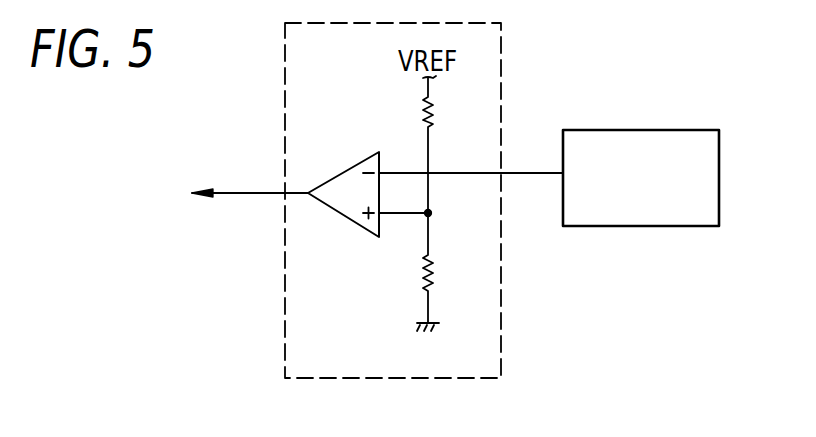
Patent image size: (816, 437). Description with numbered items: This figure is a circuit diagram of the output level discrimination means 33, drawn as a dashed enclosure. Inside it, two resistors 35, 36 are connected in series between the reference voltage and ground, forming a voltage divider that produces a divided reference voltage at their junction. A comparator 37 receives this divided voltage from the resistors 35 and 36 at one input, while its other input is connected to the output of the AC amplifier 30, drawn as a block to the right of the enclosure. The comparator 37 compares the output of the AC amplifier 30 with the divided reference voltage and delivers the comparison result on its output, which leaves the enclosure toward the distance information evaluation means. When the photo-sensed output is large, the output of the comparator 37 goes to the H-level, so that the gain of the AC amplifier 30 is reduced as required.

The AC amplifier 30 is at (690, 129).
The output level discrimination means 33 is at (502, 294).
The resistor 35 is at (437, 107).
The resistor 36 is at (432, 268).
The comparator 37 is at (347, 167).